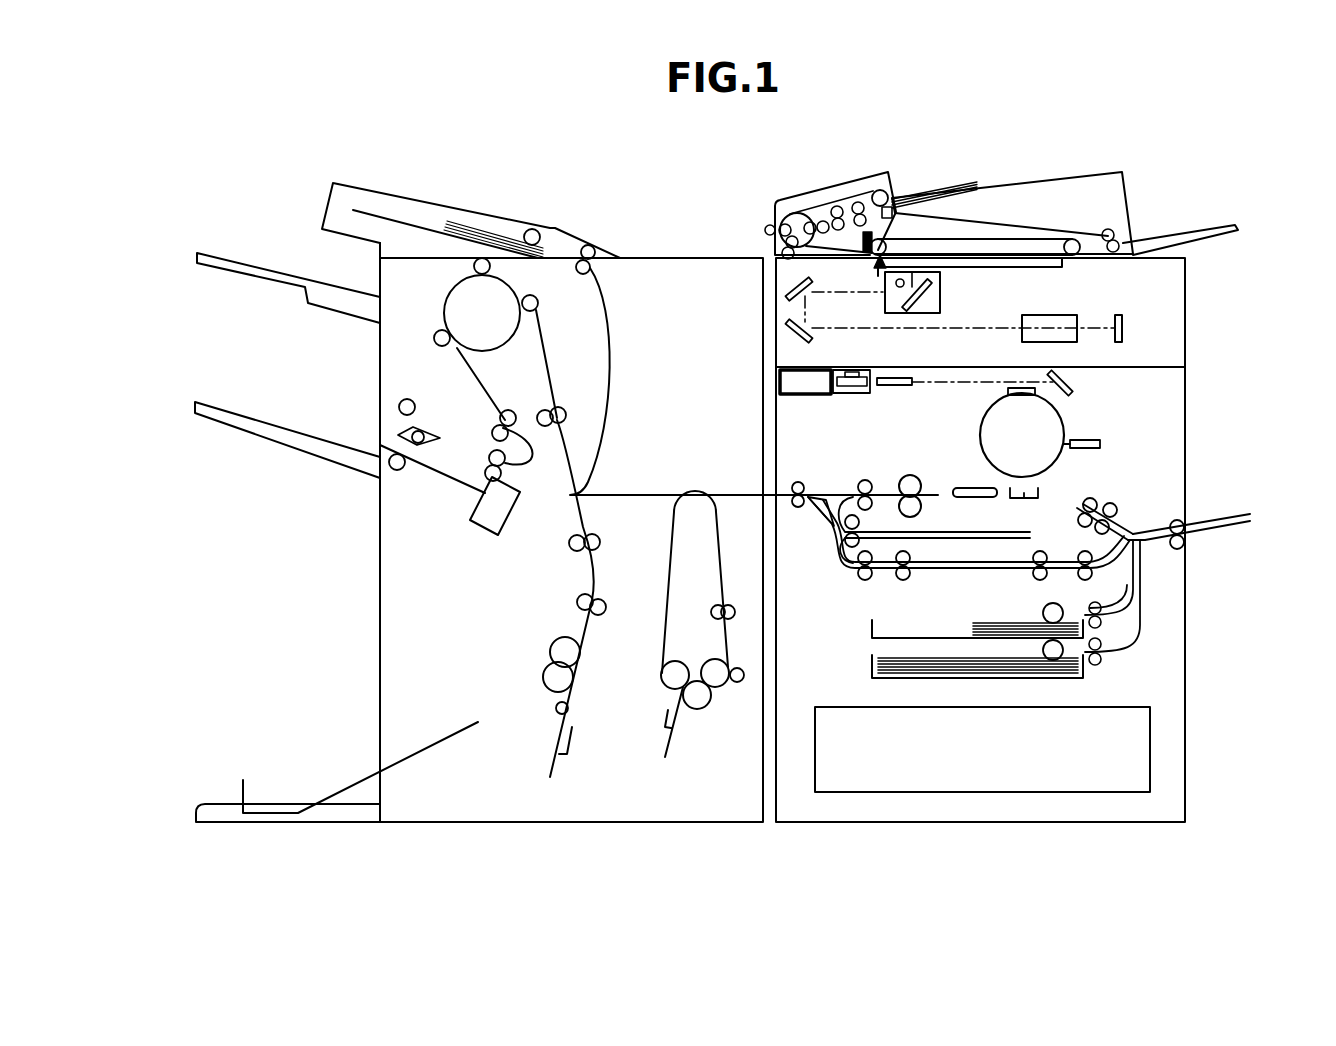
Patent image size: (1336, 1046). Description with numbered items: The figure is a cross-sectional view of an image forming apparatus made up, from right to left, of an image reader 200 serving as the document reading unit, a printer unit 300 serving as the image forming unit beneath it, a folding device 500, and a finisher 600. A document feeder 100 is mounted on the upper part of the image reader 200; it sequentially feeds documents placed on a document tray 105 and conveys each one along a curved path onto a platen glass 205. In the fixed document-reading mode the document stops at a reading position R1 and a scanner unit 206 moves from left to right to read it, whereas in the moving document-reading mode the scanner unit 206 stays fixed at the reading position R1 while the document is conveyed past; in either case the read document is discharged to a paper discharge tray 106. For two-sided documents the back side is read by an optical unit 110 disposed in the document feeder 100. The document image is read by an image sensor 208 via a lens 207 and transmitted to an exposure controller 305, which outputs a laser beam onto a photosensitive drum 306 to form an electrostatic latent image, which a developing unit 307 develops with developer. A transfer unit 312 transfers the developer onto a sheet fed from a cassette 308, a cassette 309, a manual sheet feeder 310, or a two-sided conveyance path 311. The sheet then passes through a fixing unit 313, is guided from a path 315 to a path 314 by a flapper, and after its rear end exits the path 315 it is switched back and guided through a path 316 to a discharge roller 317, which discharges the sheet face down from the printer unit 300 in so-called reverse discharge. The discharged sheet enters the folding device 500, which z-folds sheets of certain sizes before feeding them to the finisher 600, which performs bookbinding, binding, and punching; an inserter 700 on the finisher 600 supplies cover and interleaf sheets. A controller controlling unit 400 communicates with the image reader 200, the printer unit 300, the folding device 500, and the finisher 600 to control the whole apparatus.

The document feeder 100 is at (808, 192).
The document tray 105 is at (1045, 182).
The paper discharge tray 106 is at (1183, 237).
The optical unit 110 is at (872, 236).
The reading position R1 is at (863, 273).
The image reader 200 is at (1188, 318).
The platen glass 205 is at (1038, 267).
The scanner unit 206 is at (940, 302).
The lens 207 is at (1045, 315).
The image sensor 208 is at (1122, 327).
The printer unit 300 is at (1187, 743).
The exposure controller 305 is at (807, 397).
The photosensitive drum 306 is at (1063, 412).
The developing unit 307 is at (1102, 443).
The cassette 308 is at (871, 628).
The cassette 309 is at (871, 668).
The manual sheet feeder 310 is at (1225, 527).
The two-sided conveyance path 311 is at (937, 573).
The transfer unit 312 is at (1038, 493).
The fixing unit 313 is at (920, 482).
The path 314 is at (997, 539).
The path 315 is at (838, 497).
The path 316 is at (810, 508).
The discharge roller 317 is at (792, 502).
The controller controlling unit 400 is at (980, 793).
The folding device 500 is at (697, 259).
The finisher 600 is at (380, 625).
The inserter 700 is at (428, 208).